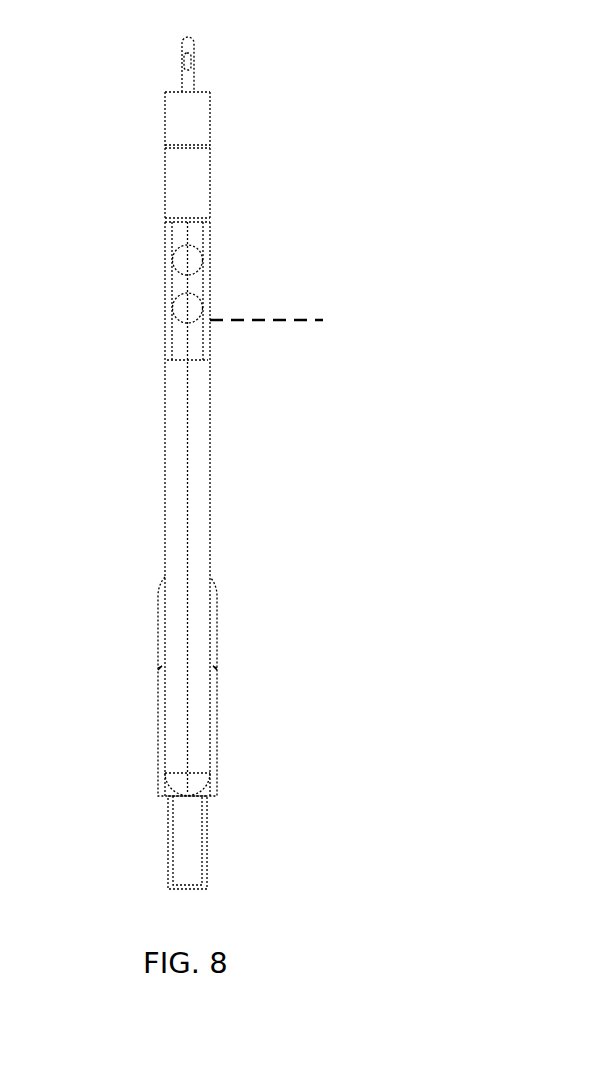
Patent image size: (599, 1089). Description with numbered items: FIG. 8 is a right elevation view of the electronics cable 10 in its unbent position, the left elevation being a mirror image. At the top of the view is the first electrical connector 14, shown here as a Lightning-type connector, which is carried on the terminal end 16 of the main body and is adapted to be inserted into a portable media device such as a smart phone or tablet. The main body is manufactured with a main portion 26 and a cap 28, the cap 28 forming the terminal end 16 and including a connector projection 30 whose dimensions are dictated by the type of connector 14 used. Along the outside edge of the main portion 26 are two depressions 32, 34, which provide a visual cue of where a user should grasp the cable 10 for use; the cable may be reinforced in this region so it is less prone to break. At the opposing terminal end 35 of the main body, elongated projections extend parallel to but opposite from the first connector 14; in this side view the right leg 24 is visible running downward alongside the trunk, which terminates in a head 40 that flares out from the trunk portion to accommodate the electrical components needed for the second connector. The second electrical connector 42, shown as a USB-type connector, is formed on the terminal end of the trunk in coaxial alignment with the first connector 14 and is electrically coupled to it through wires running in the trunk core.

The cable 10 is at (380, 436).
The first electrical connector 14 is at (200, 67).
The terminal end 16 is at (196, 143).
The right leg 24 is at (200, 480).
The main portion 26 is at (211, 268).
The cap 28 is at (165, 183).
The connector projection 30 is at (173, 90).
The depression 32 is at (185, 307).
The depression 34 is at (185, 267).
The opposing terminal end 35 is at (290, 320).
The head 40 is at (217, 618).
The second electrical connector 42 is at (212, 856).